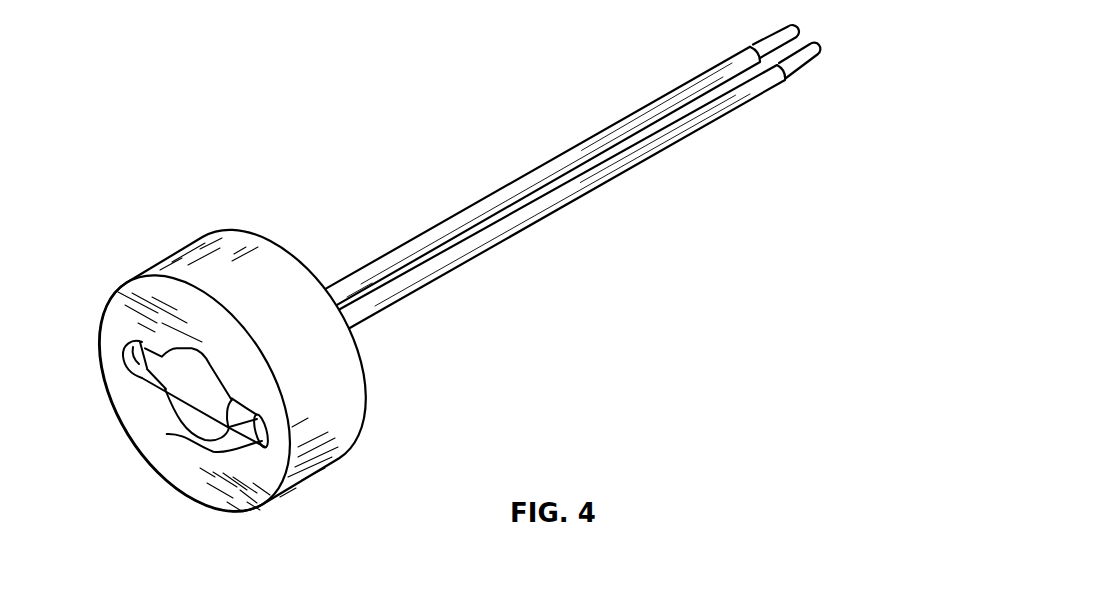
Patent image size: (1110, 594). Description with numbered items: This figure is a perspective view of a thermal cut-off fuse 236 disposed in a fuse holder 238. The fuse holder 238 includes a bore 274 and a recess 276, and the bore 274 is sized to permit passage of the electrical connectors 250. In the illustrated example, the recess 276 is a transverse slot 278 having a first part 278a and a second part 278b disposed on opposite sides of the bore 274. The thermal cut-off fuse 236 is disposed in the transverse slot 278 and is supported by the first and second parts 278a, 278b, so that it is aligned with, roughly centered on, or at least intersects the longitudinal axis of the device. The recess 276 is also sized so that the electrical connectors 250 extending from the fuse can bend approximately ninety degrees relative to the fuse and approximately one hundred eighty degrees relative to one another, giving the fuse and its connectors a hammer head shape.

The thermal cut-off fuse 236 is at (177, 372).
The fuse holder 238 is at (340, 428).
The electrical connectors 250 is at (666, 97).
The bore 274 is at (167, 434).
The recess 276 is at (125, 352).
The transverse slot 278 is at (213, 452).
The first part 278a is at (262, 418).
The second part 278b is at (137, 369).